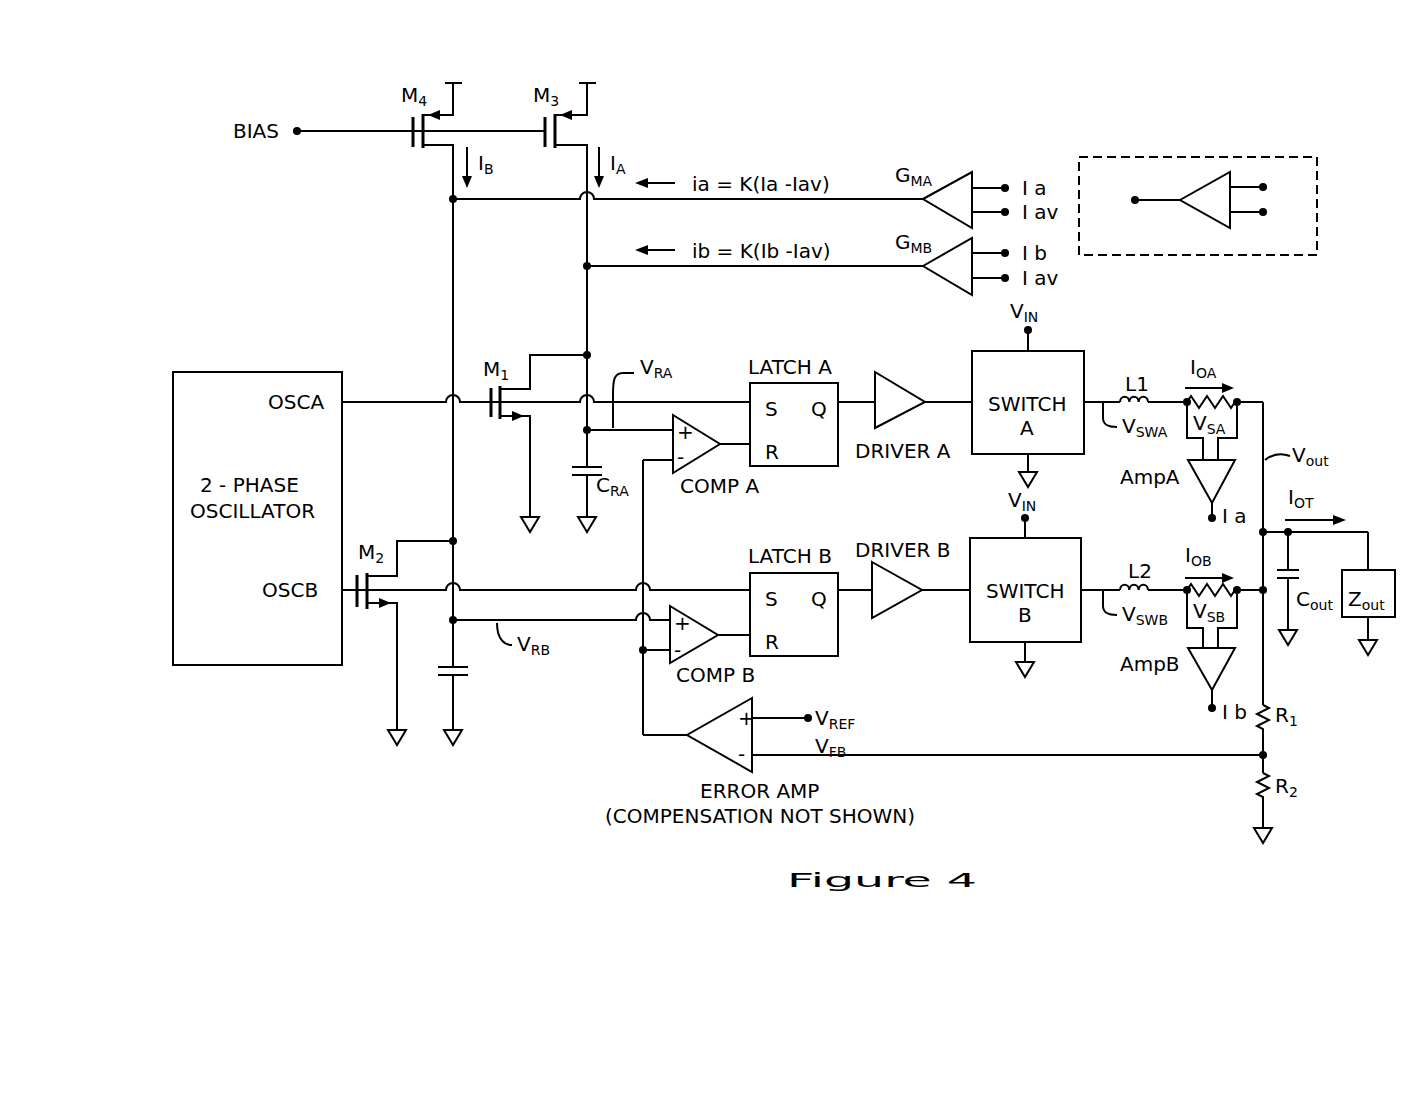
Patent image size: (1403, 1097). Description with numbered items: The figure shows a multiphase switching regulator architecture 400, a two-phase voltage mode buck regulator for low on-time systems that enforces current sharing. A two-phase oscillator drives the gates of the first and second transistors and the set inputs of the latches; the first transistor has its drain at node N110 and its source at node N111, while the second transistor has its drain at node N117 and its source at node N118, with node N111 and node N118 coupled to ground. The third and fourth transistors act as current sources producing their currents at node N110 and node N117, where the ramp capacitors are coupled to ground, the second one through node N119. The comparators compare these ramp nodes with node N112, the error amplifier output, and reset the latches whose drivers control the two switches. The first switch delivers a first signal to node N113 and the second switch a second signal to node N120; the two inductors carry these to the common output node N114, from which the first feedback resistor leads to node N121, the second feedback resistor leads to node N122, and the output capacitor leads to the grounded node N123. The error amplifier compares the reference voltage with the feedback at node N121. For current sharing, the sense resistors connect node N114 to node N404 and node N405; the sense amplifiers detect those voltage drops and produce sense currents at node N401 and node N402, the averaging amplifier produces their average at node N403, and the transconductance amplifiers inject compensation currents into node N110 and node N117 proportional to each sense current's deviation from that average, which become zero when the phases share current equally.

The multiphase switching regulator architecture 400 is at (1198, 172).
The node N110 is at (592, 292).
The node N111 is at (530, 458).
The node N112 is at (643, 533).
The node N113 is at (1103, 402).
The node N114 is at (1265, 414).
The node N117 is at (453, 497).
The node N118 is at (397, 713).
The node N119 is at (458, 717).
The node N120 is at (1103, 590).
The node N121 is at (1262, 754).
The node N122 is at (1262, 822).
The node N123 is at (1298, 618).
The node N401 is at (1208, 516).
The node N402 is at (1207, 705).
The node N403 is at (1164, 203).
The node N404 is at (1170, 402).
The node N405 is at (1170, 590).